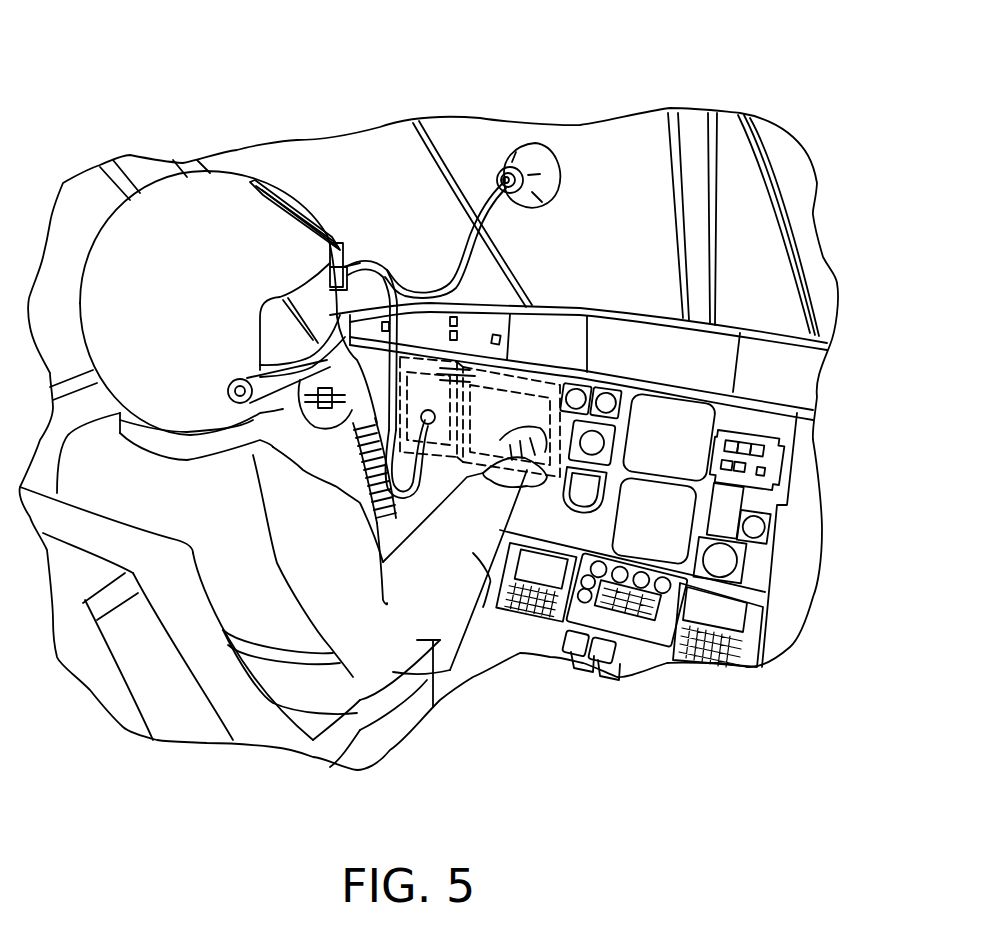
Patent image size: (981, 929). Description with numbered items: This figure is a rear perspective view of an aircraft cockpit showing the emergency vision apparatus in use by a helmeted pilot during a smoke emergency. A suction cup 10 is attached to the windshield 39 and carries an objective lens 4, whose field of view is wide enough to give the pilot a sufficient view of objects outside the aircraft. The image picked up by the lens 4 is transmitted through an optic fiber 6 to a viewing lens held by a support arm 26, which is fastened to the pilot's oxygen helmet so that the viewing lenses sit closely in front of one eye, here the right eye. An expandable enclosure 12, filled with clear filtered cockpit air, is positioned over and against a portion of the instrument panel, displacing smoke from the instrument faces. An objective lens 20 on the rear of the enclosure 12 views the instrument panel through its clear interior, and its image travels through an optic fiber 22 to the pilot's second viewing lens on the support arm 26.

The objective lens 4 is at (517, 192).
The optic fiber 6 is at (455, 257).
The suction cup 10 is at (530, 153).
The expandable box or enclosure 12 is at (477, 370).
The objective lens 20 is at (427, 437).
The optic fiber 22 is at (383, 263).
The support arm 26 is at (290, 208).
The windshield 39 is at (627, 137).